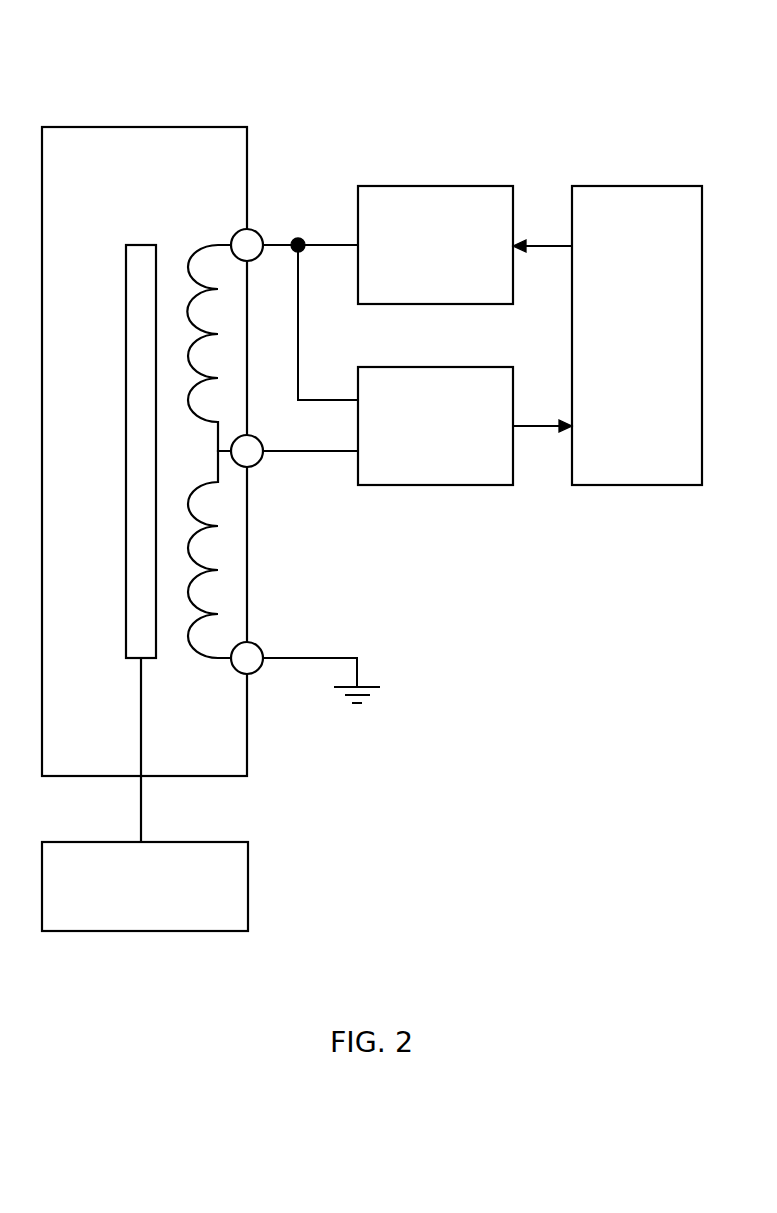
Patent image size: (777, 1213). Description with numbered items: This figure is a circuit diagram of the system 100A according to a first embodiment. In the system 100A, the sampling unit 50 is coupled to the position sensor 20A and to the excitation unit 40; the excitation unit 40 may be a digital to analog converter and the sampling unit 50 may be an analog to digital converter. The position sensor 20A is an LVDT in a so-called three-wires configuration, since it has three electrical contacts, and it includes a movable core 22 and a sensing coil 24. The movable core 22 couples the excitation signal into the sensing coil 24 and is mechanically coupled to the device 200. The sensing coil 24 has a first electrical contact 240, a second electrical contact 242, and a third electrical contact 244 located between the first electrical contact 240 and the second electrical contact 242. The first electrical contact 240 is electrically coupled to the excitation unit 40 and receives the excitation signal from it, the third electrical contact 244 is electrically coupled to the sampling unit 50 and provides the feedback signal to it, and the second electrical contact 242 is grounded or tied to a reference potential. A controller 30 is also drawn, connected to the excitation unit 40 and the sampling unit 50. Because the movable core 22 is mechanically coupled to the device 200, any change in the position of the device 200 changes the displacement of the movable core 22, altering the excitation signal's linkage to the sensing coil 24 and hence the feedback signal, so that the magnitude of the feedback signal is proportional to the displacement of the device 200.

The system 100A is at (400, 68).
The position sensor 20A is at (143, 127).
The movable core 22 is at (138, 245).
The sensing coil 24 is at (195, 243).
The first electrical contact 240 is at (259, 230).
The third electrical contact 244 is at (259, 436).
The second electrical contact 242 is at (259, 643).
The excitation unit 40 is at (435, 186).
The sampling unit 50 is at (435, 367).
The controller 30 is at (637, 186).
The device 200 is at (193, 842).